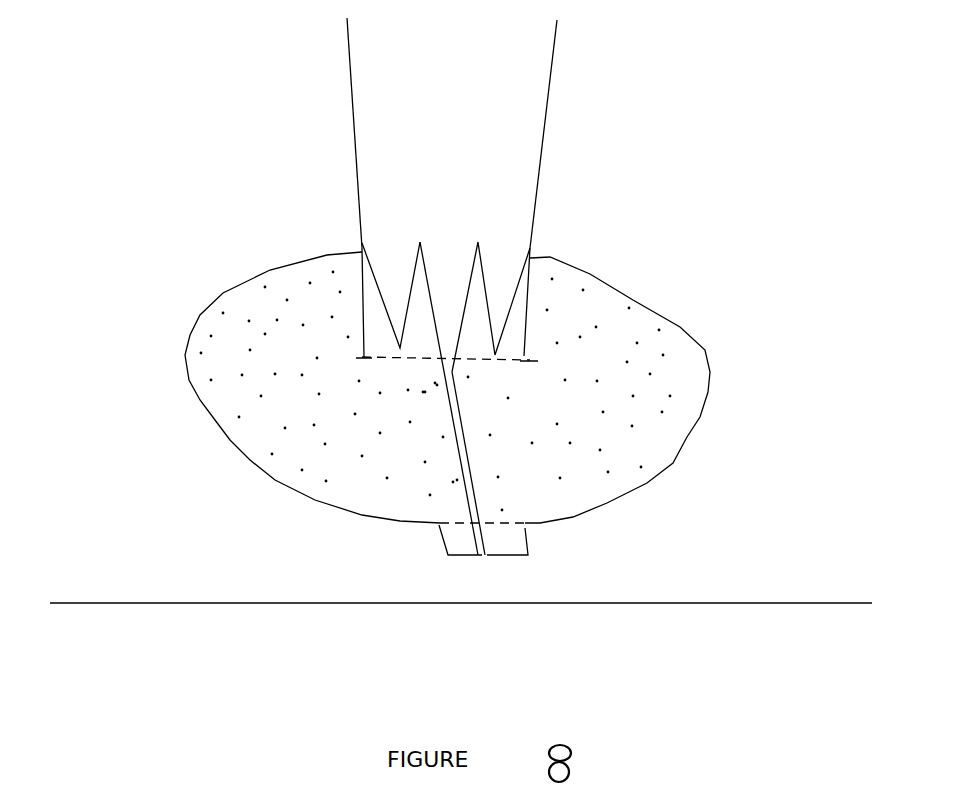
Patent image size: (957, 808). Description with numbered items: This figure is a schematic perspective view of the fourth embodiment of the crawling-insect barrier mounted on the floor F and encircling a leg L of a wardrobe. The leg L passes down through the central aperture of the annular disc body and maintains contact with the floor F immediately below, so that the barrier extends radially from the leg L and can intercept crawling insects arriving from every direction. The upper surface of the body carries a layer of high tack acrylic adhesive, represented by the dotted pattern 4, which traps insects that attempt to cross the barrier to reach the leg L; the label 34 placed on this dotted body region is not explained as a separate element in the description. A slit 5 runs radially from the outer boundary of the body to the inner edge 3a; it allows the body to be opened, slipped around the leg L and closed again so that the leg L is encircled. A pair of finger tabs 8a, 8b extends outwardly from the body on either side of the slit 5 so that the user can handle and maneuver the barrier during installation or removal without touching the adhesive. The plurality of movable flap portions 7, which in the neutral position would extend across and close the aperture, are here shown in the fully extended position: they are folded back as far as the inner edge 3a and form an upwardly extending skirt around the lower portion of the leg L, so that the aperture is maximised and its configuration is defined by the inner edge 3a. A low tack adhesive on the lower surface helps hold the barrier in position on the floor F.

The leg L is at (522, 110).
The bulk body 34 is at (243, 300).
The dotted pattern 4 is at (285, 462).
The radial flap portions 7 is at (473, 285).
The inner edge 3a is at (500, 363).
The slit 5 is at (470, 485).
The finger tab 8a is at (462, 538).
The finger tab 8b is at (505, 540).
The floor F is at (790, 603).